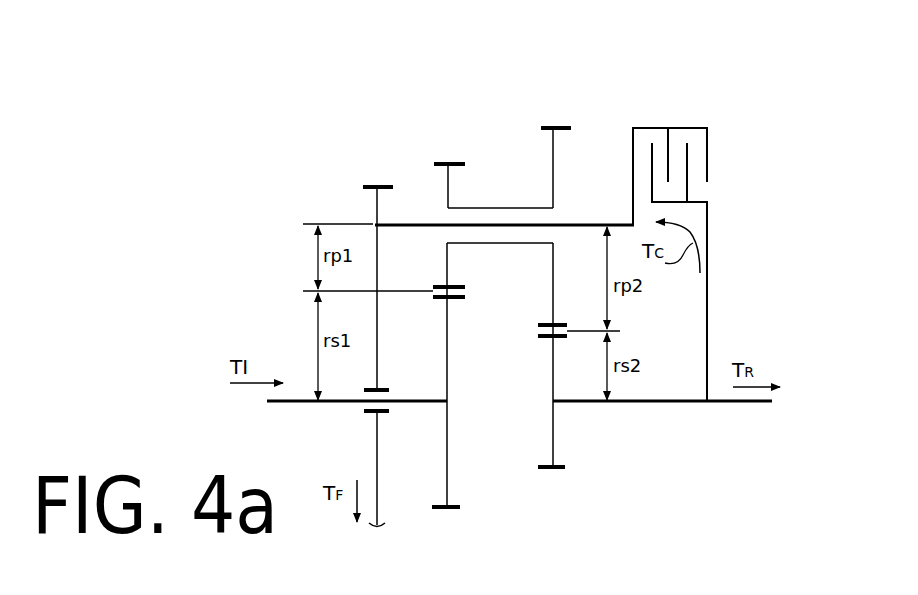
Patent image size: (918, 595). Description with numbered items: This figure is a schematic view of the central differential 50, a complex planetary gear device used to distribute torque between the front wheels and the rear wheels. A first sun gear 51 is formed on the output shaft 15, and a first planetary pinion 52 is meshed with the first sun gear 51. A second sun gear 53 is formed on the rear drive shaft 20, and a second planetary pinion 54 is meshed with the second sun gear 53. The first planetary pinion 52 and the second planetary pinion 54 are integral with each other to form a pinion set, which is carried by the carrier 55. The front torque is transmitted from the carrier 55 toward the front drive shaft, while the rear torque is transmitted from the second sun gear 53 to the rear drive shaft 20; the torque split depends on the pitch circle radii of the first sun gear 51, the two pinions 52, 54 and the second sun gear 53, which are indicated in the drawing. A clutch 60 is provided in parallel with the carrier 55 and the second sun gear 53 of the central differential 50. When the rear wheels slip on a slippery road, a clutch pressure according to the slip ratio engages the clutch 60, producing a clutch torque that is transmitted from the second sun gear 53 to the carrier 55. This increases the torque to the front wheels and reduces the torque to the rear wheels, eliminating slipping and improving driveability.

The output shaft 15 is at (293, 403).
The rear drive shaft 20 is at (732, 404).
The central differential 50 is at (492, 140).
The first sun gear 51 is at (450, 509).
The first planetary pinion 52 is at (450, 163).
The second sun gear 53 is at (558, 469).
The second planetary pinion 54 is at (585, 112).
The carrier 55 is at (605, 200).
The clutch 60 is at (710, 170).